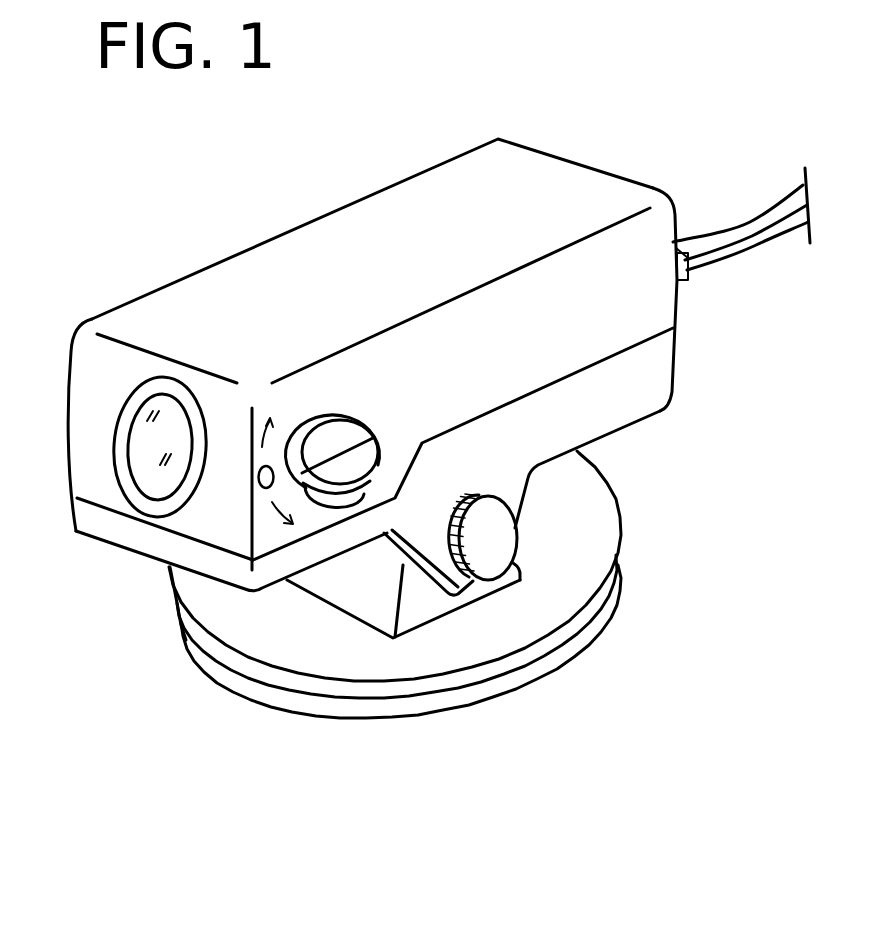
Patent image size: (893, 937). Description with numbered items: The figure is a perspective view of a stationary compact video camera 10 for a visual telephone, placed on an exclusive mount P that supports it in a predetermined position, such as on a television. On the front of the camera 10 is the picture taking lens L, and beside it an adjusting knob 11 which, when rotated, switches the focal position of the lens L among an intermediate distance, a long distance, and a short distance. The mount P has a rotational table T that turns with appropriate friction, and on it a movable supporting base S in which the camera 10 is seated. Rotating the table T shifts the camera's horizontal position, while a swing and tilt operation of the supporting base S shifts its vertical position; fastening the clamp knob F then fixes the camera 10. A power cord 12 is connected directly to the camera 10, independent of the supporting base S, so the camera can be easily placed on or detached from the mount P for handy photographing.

The video camera 10 is at (220, 262).
The adjusting knob 11 is at (330, 418).
The power cord 12 is at (748, 253).
The picture taking lens L is at (140, 446).
The supporting base S is at (672, 392).
The rotational table T is at (588, 512).
The clamp knob F is at (523, 553).
The mount P is at (482, 700).